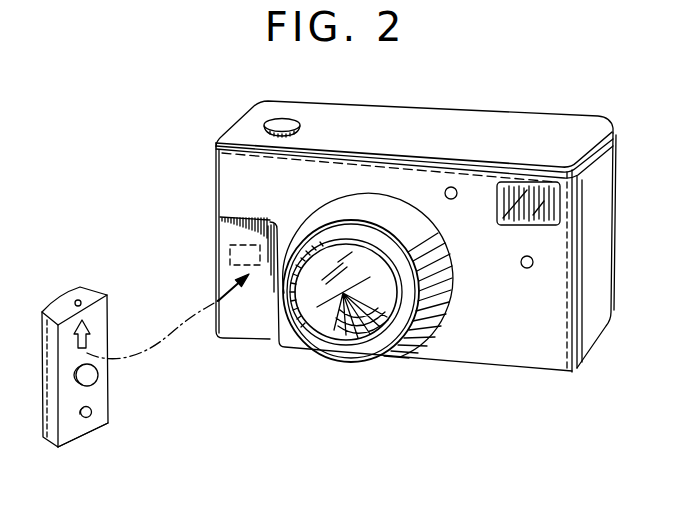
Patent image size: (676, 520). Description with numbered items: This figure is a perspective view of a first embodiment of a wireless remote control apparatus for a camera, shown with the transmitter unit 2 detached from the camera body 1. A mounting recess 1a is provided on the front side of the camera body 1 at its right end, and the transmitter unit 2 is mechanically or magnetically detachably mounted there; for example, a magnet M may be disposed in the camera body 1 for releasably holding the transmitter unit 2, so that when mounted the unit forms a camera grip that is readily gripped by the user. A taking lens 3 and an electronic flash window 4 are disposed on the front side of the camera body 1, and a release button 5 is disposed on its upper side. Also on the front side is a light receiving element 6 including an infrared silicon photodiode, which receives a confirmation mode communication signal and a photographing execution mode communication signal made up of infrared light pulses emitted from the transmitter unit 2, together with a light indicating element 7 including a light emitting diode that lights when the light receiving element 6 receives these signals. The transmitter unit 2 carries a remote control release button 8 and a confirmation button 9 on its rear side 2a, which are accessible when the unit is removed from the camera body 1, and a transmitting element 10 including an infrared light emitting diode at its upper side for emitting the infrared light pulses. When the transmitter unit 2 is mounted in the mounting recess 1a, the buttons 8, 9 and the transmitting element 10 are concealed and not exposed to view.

The camera body 1 is at (416, 236).
The mounting recess 1a is at (228, 272).
The transmitter unit 2 is at (53, 309).
The rear side 2a is at (75, 437).
The taking lens 3 is at (318, 306).
The electronic flash window 4 is at (553, 197).
The release button 5 is at (281, 122).
The light receiving element 6 is at (452, 199).
The light indicating element 7 is at (527, 268).
The remote control release button 8 is at (92, 375).
The confirmation button 9 is at (89, 413).
The transmitting element 10 is at (79, 300).
The magnet M is at (230, 252).